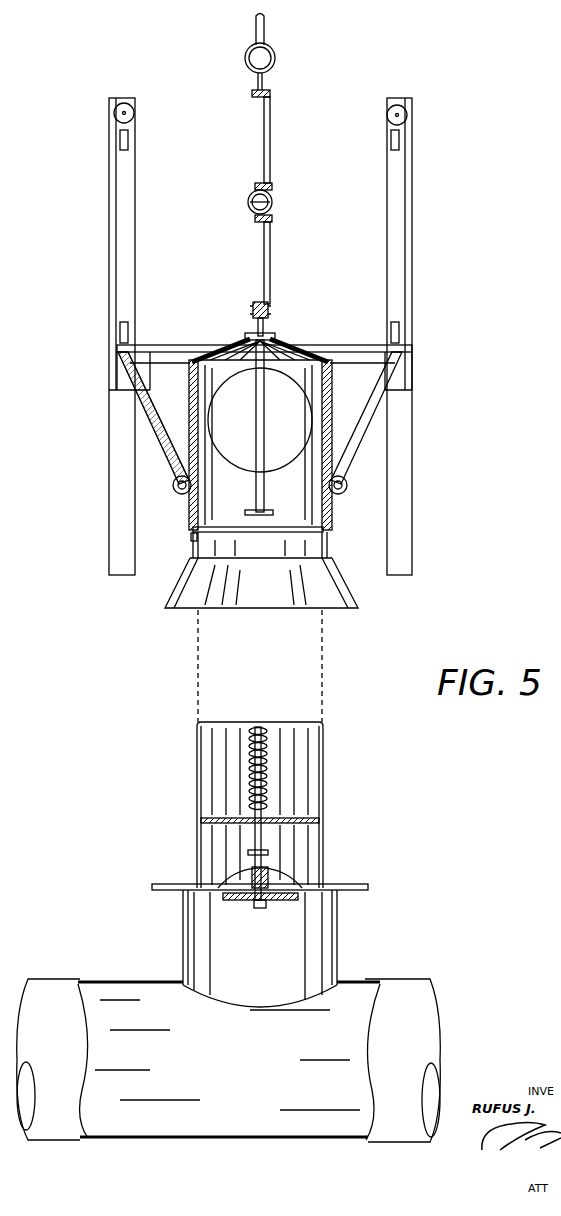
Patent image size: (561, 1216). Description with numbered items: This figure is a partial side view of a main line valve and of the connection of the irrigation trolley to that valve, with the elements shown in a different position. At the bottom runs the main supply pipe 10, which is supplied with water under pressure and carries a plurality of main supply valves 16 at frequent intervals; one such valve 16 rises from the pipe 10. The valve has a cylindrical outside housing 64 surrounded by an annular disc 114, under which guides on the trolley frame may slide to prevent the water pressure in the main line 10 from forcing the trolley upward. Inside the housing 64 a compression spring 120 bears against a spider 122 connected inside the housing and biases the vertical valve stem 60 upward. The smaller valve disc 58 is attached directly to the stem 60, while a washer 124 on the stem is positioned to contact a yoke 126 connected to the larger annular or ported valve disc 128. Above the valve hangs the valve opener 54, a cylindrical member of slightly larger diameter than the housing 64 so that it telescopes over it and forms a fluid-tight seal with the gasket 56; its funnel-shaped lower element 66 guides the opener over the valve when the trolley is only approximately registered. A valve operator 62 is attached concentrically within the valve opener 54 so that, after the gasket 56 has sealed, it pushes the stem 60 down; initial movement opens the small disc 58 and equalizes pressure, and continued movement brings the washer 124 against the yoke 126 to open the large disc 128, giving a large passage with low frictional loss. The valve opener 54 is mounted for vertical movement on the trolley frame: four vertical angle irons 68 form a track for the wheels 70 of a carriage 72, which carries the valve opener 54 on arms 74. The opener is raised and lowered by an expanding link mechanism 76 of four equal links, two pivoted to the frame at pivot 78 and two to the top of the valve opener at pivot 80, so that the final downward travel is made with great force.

The main supply pipe 10 is at (53, 986).
The main supply valve 16 is at (337, 937).
The valve opener 54 is at (189, 507).
The gasket 56 is at (191, 537).
The valve disc 58 is at (288, 906).
The valve stem 60 is at (265, 848).
The valve operator 62 is at (262, 426).
The outside housing 64 is at (323, 774).
The funnel-shaped lower element 66 is at (342, 581).
The vertical angle iron 68 is at (412, 442).
The wheel 70 is at (130, 345).
The carriage 72 is at (157, 352).
The arm 74 is at (150, 404).
The expanding link mechanism 76 is at (278, 247).
The frame pivot 78 is at (275, 93).
The valve opener pivot 80 is at (272, 310).
The annular disc 114 is at (345, 886).
The compression spring 120 is at (267, 742).
The spider 122 is at (217, 818).
The washer 124 is at (255, 852).
The yoke 126 is at (230, 886).
The annular valve disc 128 is at (214, 900).